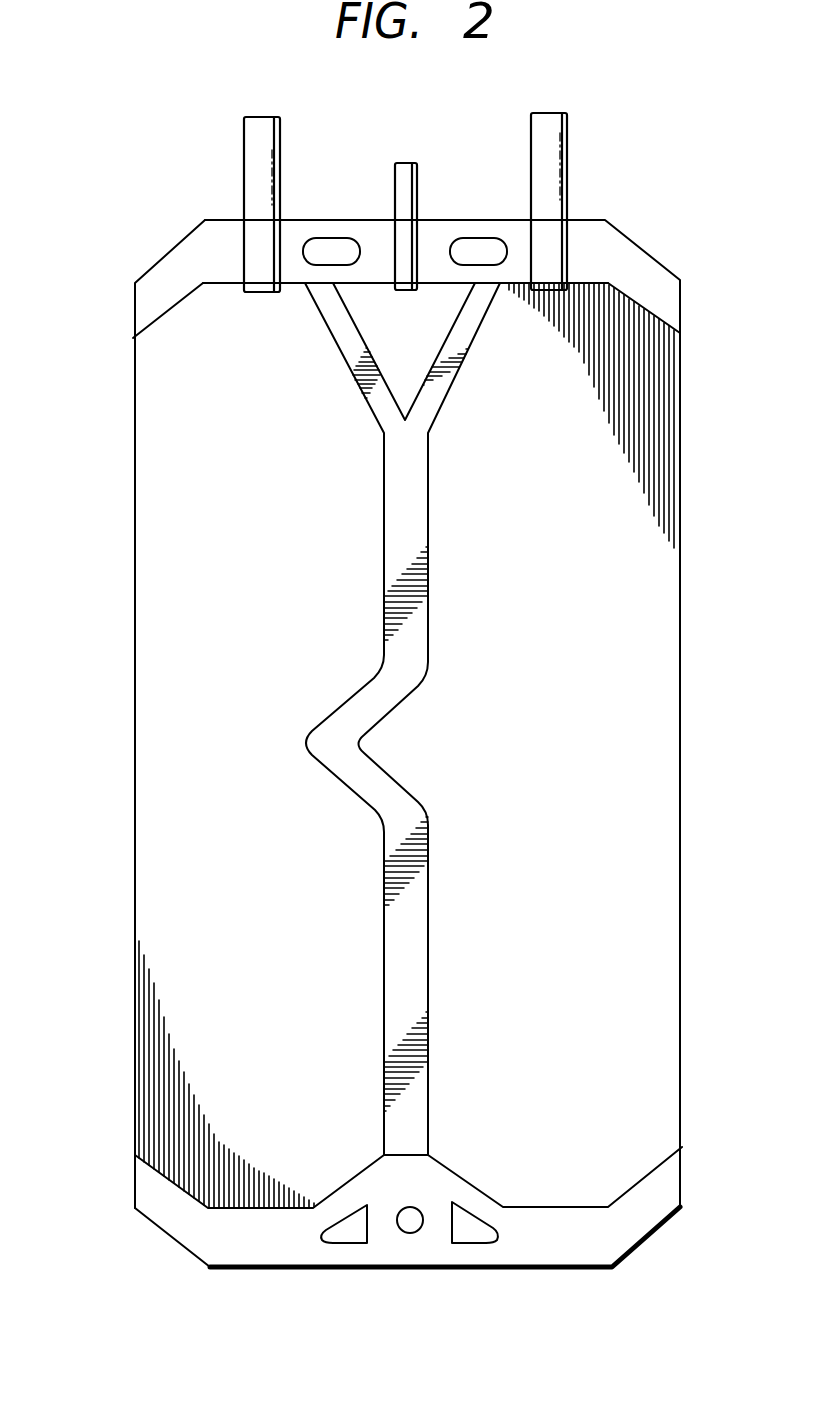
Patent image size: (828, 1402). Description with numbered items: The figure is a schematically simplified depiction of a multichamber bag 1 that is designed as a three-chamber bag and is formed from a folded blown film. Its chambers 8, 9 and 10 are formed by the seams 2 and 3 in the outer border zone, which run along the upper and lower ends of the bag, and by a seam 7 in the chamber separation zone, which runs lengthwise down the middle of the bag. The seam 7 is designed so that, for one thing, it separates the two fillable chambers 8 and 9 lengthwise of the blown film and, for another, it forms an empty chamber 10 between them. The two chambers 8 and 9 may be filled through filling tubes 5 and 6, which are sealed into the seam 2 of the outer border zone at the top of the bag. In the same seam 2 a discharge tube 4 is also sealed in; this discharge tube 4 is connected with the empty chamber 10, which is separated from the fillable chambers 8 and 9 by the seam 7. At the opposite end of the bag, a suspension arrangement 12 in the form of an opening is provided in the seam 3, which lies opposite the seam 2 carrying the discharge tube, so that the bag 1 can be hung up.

The multichamber bag 1 is at (670, 200).
The seam of the outer border zone 2 is at (170, 282).
The seam of the outer border zone 3 is at (183, 1219).
The discharge tube 4 is at (405, 185).
The filling tube 5 is at (268, 138).
The filling tube 6 is at (555, 142).
The seam in the chamber separation zone 7 is at (327, 743).
The chamber 8 is at (655, 485).
The chamber 9 is at (170, 645).
The empty chamber 10 is at (387, 327).
The suspension arrangement 12 is at (410, 1220).